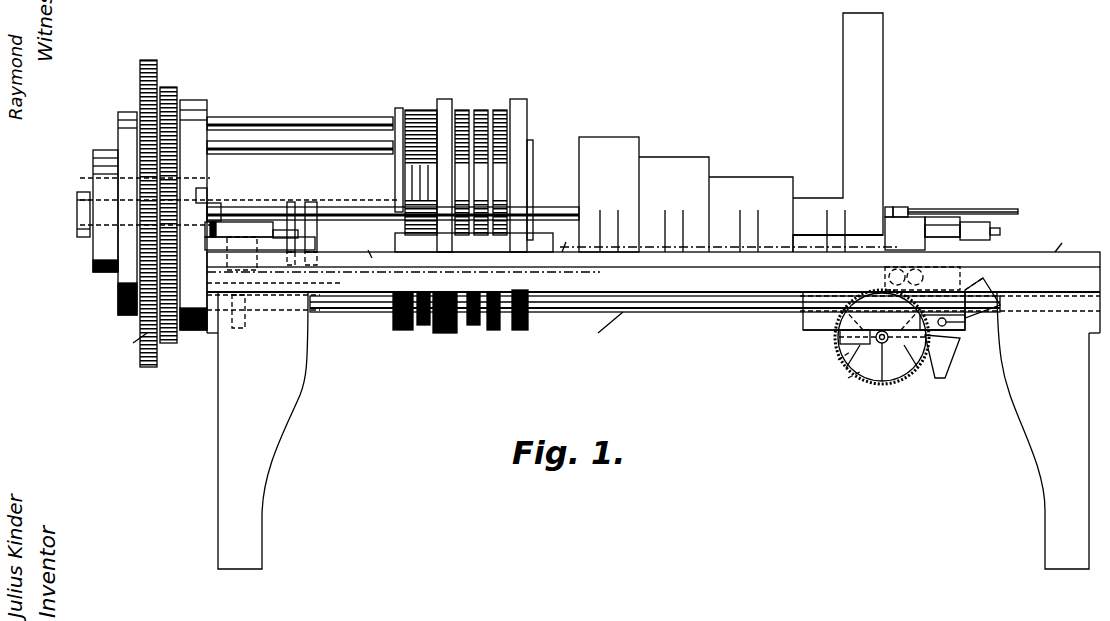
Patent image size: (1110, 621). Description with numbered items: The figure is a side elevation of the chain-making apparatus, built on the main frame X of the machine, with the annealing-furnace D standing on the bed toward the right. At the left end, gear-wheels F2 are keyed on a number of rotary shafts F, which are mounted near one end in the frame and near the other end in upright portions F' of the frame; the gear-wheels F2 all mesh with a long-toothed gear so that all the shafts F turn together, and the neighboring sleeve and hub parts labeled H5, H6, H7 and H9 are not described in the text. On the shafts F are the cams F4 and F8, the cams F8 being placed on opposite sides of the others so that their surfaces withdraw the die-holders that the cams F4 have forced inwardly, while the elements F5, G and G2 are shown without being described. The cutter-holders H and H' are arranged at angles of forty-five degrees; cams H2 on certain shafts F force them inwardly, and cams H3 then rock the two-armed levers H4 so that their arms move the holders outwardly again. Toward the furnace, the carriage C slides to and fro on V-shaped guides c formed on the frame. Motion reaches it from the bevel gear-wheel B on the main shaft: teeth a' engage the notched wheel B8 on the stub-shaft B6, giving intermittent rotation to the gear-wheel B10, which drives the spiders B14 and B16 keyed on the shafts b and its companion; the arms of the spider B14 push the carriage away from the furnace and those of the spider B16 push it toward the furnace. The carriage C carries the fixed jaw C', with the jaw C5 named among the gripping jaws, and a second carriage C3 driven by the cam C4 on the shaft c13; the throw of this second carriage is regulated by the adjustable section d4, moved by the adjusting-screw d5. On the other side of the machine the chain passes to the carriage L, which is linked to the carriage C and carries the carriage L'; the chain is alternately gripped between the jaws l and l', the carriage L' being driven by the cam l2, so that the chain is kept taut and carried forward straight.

The carriage C is at (653, 280).
The V-shaped guides c is at (718, 242).
The main frame X is at (536, 283).
The cutter-holder H is at (653, 431).
The cutter-holder H' is at (552, 325).
The cam H2 is at (192, 194).
The cam H3 is at (408, 100).
The lever H4 is at (207, 180).
The collar H5 is at (222, 205).
The nut H6 is at (80, 215).
The cylinder H7 is at (97, 170).
The hub flange H9 is at (118, 285).
The shafts F is at (393, 190).
The upright portions of the frame F' is at (480, 216).
The gear-wheels F2 is at (143, 80).
The cam F4 is at (484, 108).
The gear F5 is at (472, 100).
The cam F8 is at (450, 345).
The gear frame G is at (540, 172).
The gear frame shaft G2 is at (533, 188).
The annealing-furnace D is at (731, 132).
The carriage L is at (270, 240).
The carriage L' is at (284, 207).
The jaw l is at (314, 228).
The jaw l' is at (296, 228).
The cam l2 is at (258, 232).
The second carriage C3 is at (246, 308).
The fixed jaw C' is at (903, 216).
The cam C4 is at (940, 220).
The jaw C5 is at (900, 205).
The shaft c13 is at (982, 289).
The adjustable section d4 is at (965, 225).
The adjusting-screw d5 is at (1000, 228).
The bevel gear-wheel B is at (803, 325).
The stub-shaft B6 is at (845, 345).
The notched wheel B8 is at (843, 378).
The gear-wheel B10 is at (852, 380).
The spider B14 is at (948, 340).
The spider B16 is at (950, 368).
The shaft b is at (965, 322).
The teeth a' is at (830, 340).